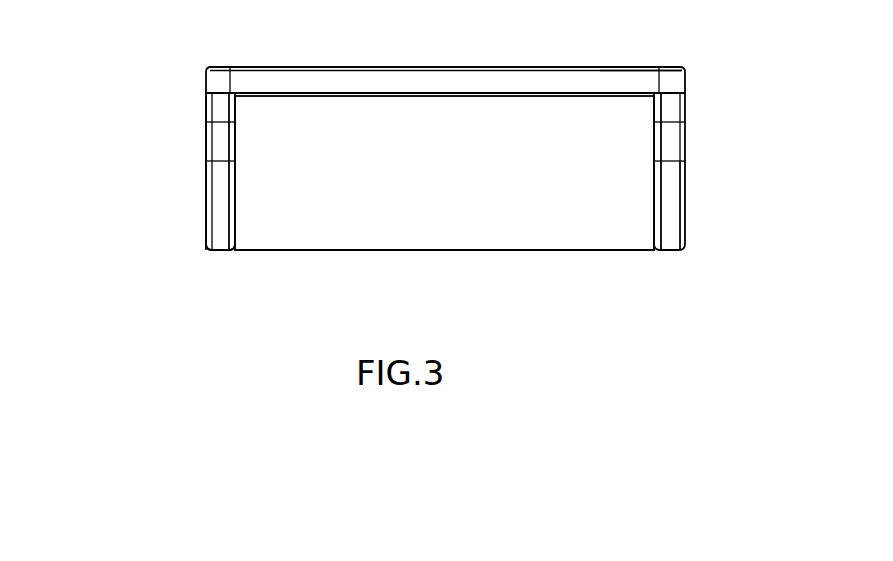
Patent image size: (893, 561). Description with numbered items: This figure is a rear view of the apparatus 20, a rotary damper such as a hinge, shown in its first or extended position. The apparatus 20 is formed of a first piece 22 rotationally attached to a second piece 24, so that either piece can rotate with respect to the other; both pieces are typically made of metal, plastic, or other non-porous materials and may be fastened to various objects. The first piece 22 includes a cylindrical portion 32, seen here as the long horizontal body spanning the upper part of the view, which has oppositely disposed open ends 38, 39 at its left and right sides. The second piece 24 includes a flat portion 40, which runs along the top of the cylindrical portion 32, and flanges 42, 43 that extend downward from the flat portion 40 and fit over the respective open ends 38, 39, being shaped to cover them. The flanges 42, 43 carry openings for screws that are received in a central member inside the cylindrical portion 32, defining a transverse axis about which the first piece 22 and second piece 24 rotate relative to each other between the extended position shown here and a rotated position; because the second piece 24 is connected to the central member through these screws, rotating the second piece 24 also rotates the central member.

The apparatus 20 is at (185, 150).
The first piece 22 is at (453, 178).
The second piece 24 is at (538, 68).
The cylindrical portion 32 is at (541, 251).
The open end 38 is at (232, 191).
The open end 39 is at (657, 170).
The flat portion 40 is at (627, 79).
The flange 42 is at (221, 244).
The flange 43 is at (673, 233).